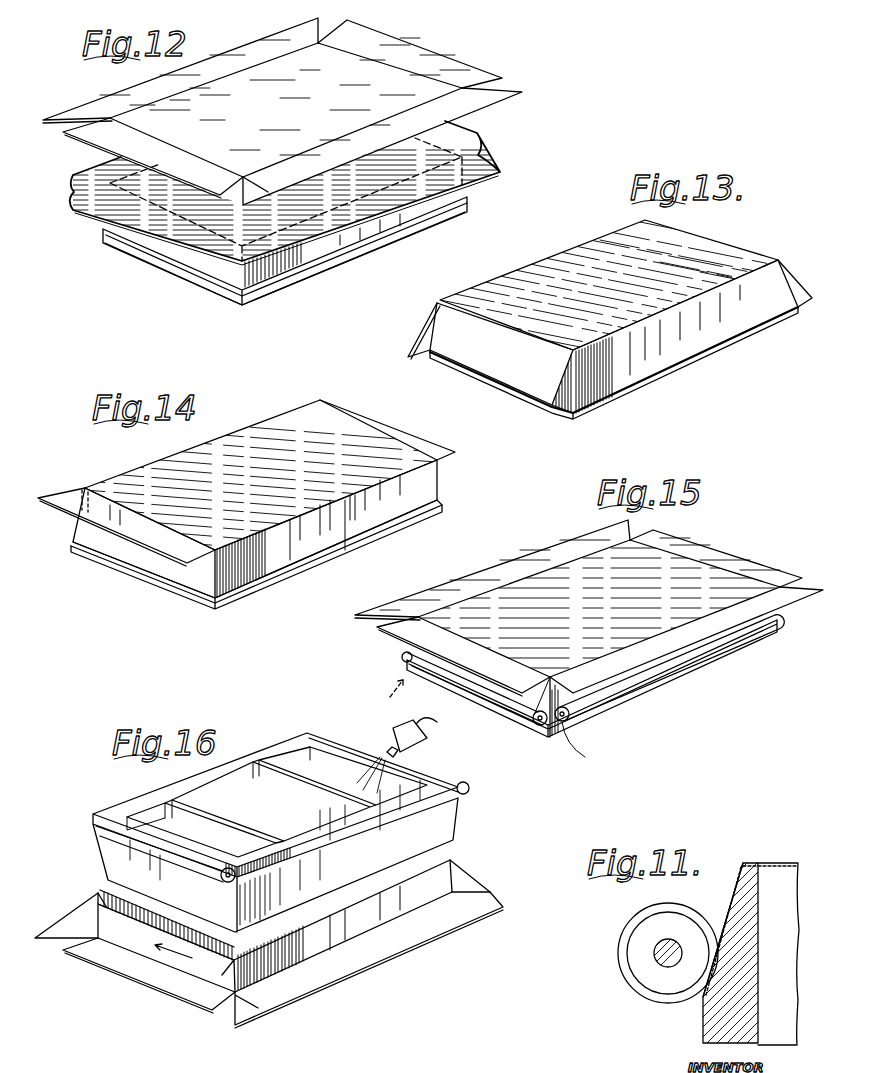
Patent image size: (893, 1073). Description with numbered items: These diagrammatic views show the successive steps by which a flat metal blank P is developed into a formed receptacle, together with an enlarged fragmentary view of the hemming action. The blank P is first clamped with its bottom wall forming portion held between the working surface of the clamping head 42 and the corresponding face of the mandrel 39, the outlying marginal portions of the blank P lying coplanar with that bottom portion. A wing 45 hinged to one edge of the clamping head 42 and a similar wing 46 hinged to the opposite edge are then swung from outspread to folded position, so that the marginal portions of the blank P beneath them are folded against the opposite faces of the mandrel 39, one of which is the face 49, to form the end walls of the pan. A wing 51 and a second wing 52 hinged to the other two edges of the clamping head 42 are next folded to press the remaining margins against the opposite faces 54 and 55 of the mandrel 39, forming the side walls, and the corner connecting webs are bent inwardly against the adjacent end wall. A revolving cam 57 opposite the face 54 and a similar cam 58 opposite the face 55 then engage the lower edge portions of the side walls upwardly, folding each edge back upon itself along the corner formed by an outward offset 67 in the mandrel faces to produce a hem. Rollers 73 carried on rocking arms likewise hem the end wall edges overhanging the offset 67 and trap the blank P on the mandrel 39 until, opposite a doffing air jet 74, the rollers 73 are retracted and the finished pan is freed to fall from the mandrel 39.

In FIG. 12, the mandrel 39 is at (347, 272).
In FIG. 13, the mandrel 39 is at (618, 403).
In FIG. 14, the mandrel 39 is at (264, 597).
In FIG. 15, the mandrel 39 is at (604, 719).
In FIG. 16, the mandrel 39 is at (132, 787).
In FIG. 11, the mandrel 39 is at (803, 871).
In FIG. 12, the clamping head 42 is at (487, 64).
In FIG. 13, the clamping head 42 is at (733, 236).
In FIG. 14, the clamping head 42 is at (387, 412).
In FIG. 15, the clamping head 42 is at (787, 558).
In FIG. 16, the clamping head 42 is at (116, 984).
In FIG. 12, the wing 45 is at (182, 160).
In FIG. 13, the wing 45 is at (500, 360).
In FIG. 14, the wing 45 is at (133, 530).
In FIG. 15, the wing 45 is at (473, 657).
In FIG. 16, the wing 45 is at (157, 977).
In FIG. 12, the wing 46 is at (421, 62).
In FIG. 13, the wing 46 is at (795, 283).
In FIG. 14, the wing 46 is at (407, 435).
In FIG. 15, the wing 46 is at (717, 560).
In FIG. 16, the wing 46 is at (460, 890).
In FIG. 12, the face of the mandrel 49 is at (187, 257).
In FIG. 16, the face of the mandrel 49 is at (123, 867).
In FIG. 12, the wing 51 is at (245, 52).
In FIG. 15, the wing 51 is at (537, 552).
In FIG. 16, the wing 51 is at (353, 963).
In FIG. 12, the second wing 52 is at (368, 133).
In FIG. 13, the second wing 52 is at (697, 327).
In FIG. 14, the second wing 52 is at (303, 523).
In FIG. 15, the second wing 52 is at (720, 620).
In FIG. 16, the second wing 52 is at (93, 920).
In FIG. 16, the face of the mandrel 54 is at (433, 827).
In FIG. 11, the face of the mandrel 54 is at (738, 878).
In FIG. 12, the face of the mandrel 55 is at (390, 230).
In FIG. 15, the revolving cam 57 is at (403, 657).
In FIG. 11, the revolving cam 57 is at (643, 993).
In FIG. 15, the cam 58 is at (667, 677).
In FIG. 12, the outward offset 67 is at (228, 296).
In FIG. 11, the outward offset 67 is at (703, 1025).
In FIG. 15, the rollers 73 is at (510, 707).
In FIG. 16, the rollers 73 is at (127, 840).
In FIG. 16, the doffing air jet 74 is at (407, 732).
In FIG. 12, the blank P is at (480, 140).
In FIG. 14, the blank P is at (148, 557).
In FIG. 11, the blank P is at (767, 860).